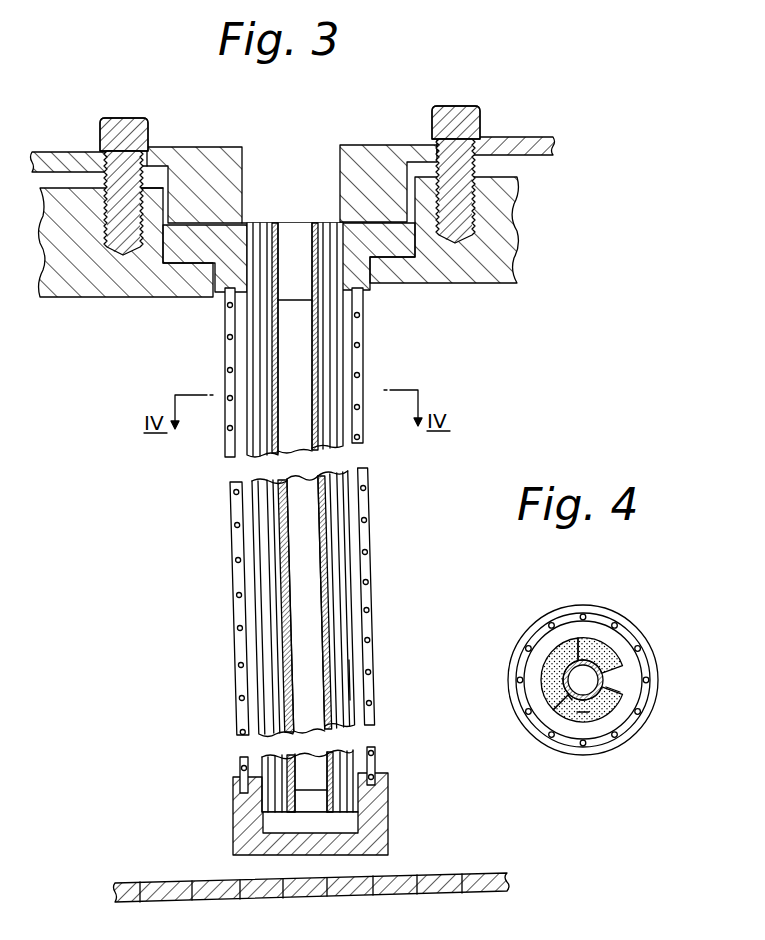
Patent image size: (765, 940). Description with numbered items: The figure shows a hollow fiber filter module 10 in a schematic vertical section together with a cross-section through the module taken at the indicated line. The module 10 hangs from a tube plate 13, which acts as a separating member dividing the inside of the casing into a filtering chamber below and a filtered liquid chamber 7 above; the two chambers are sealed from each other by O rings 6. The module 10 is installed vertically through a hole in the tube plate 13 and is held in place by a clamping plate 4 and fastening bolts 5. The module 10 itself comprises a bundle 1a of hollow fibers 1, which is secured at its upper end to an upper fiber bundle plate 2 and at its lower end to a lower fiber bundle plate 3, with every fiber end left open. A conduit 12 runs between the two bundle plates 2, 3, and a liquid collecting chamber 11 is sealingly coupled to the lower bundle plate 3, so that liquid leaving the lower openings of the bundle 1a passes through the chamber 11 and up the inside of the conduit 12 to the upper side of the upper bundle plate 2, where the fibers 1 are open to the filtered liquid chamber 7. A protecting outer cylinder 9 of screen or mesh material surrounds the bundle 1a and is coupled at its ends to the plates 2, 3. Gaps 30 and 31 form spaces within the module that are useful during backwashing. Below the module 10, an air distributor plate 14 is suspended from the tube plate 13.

In FIG. 3, the hollow fibers 1 is at (343, 333).
In FIG. 3, the bundle of hollow fibers 1a is at (348, 540).
In FIG. 4, the bundle of hollow fibers 1a is at (613, 663).
In FIG. 3, the upper fiber bundle plate 2 is at (398, 276).
In FIG. 3, the lower fiber bundle plate 3 is at (302, 802).
In FIG. 4, the lower fiber bundle plate 3 is at (530, 625).
In FIG. 3, the clamping plate 4 is at (515, 135).
In FIG. 3, the fastening bolts 5 is at (472, 108).
In FIG. 3, the O rings 6 is at (165, 238).
In FIG. 3, the filtered liquid chamber 7 is at (402, 81).
In FIG. 3, the protecting outer cylinder 9 is at (365, 360).
In FIG. 4, the protecting outer cylinder 9 is at (512, 657).
In FIG. 3, the hollow fiber filter module 10 is at (285, 604).
In FIG. 3, the liquid collecting chamber 11 is at (277, 823).
In FIG. 3, the conduit 12 is at (282, 339).
In FIG. 4, the conduit 12 is at (570, 703).
In FIG. 3, the tube plate 13 is at (520, 222).
In FIG. 3, the air distributor plate 14 is at (443, 877).
In FIG. 4, the gap 30 is at (622, 697).
In FIG. 3, the gap 31 is at (360, 692).
In FIG. 4, the gap 31 is at (584, 730).